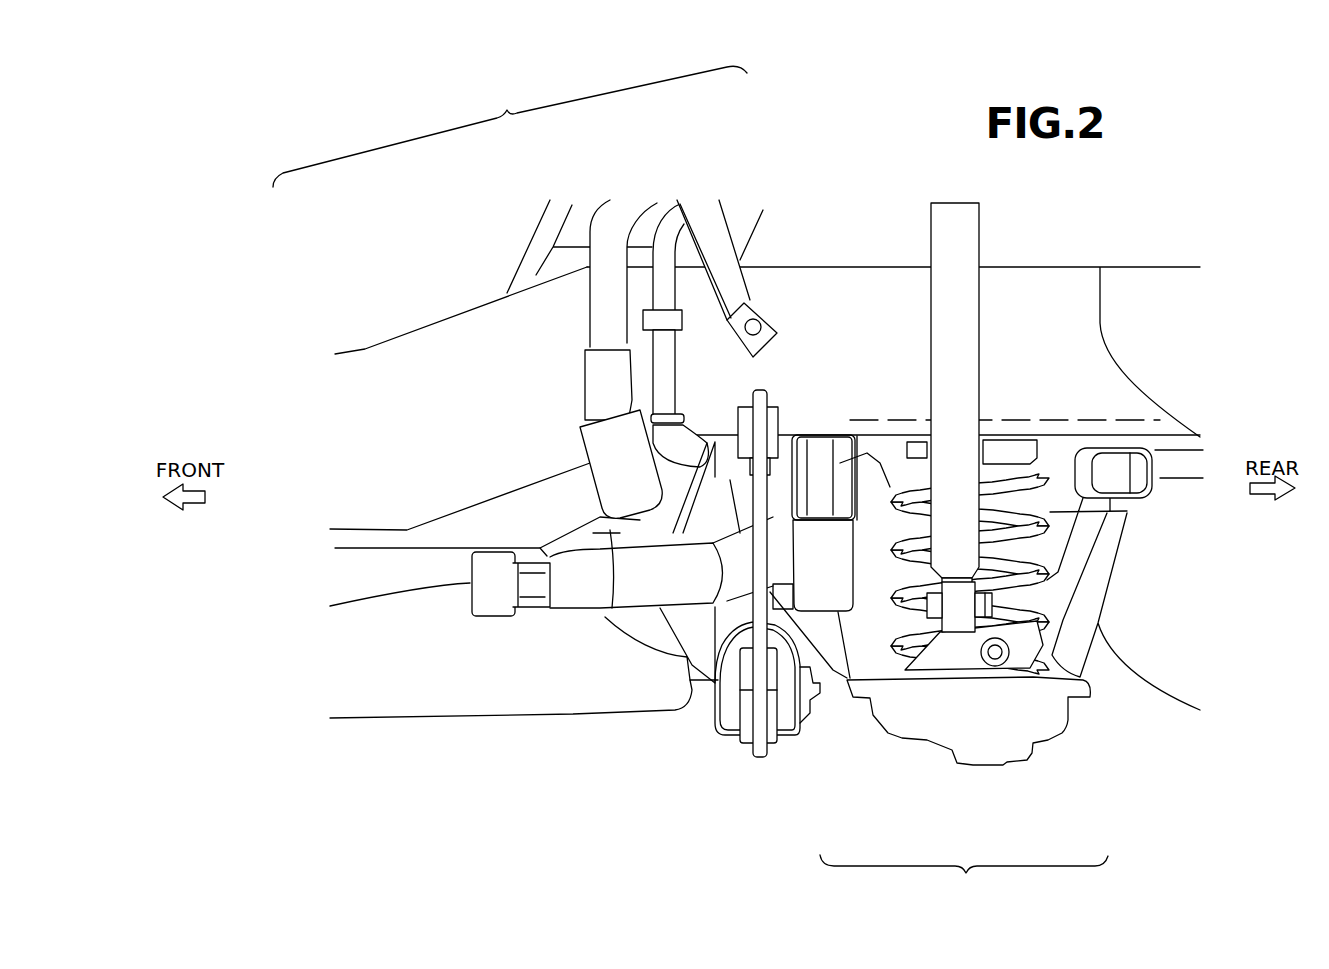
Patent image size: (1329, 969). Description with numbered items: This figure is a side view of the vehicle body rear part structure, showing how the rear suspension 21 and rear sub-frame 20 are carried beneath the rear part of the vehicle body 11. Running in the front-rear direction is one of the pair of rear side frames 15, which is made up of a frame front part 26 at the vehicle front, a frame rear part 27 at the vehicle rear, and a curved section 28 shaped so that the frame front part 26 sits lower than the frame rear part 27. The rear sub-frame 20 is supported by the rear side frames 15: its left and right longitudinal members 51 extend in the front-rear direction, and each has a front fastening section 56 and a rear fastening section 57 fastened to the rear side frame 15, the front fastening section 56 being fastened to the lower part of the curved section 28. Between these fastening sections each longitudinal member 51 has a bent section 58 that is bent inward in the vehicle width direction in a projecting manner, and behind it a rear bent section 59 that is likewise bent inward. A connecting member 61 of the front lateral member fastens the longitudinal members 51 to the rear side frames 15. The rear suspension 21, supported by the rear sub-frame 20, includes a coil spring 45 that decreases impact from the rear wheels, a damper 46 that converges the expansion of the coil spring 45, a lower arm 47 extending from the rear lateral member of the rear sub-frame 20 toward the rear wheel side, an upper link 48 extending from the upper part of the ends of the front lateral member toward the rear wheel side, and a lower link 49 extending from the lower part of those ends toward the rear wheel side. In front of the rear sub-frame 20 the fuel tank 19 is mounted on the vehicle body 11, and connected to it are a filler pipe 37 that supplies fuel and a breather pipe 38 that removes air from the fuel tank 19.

The vehicle body 11 is at (234, 116).
The rear side frame 15 is at (510, 126).
The fuel tank 19 is at (433, 730).
The rear sub-frame 20 is at (907, 481).
The rear suspension 21 is at (964, 878).
The frame front part 26 is at (317, 357).
The frame rear part 27 is at (829, 264).
The curved section 28 is at (464, 305).
The filler pipe 37 is at (608, 247).
The breather pipe 38 is at (672, 230).
The coil spring 45 is at (1013, 623).
The damper 46 is at (963, 550).
The lower arm 47 is at (893, 710).
The upper link 48 is at (760, 572).
The lower link 49 is at (760, 702).
The longitudinal member 51 is at (678, 700).
The front fastening section 56 is at (525, 600).
The rear fastening section 57 is at (1137, 500).
The bent section 58 is at (607, 605).
The rear bent section 59 is at (1005, 503).
The connecting member 61 is at (826, 520).